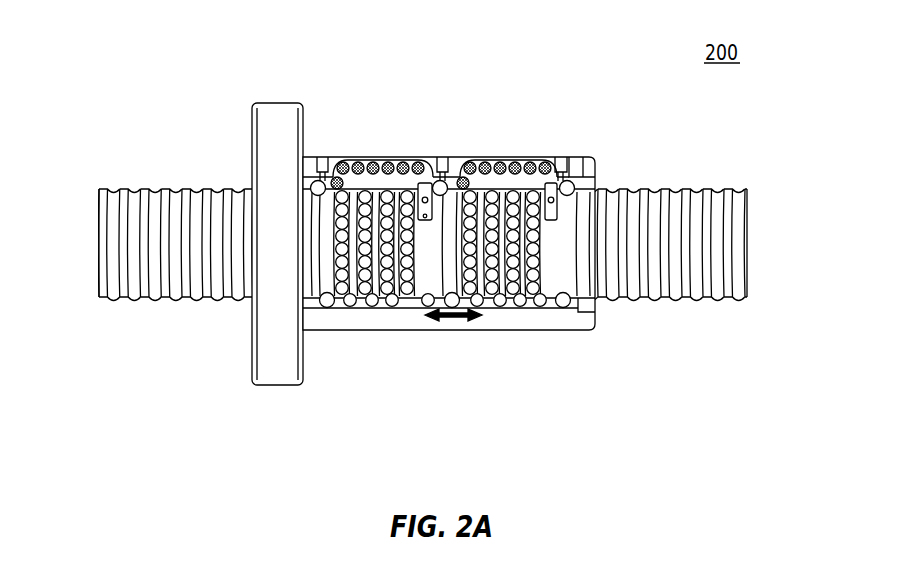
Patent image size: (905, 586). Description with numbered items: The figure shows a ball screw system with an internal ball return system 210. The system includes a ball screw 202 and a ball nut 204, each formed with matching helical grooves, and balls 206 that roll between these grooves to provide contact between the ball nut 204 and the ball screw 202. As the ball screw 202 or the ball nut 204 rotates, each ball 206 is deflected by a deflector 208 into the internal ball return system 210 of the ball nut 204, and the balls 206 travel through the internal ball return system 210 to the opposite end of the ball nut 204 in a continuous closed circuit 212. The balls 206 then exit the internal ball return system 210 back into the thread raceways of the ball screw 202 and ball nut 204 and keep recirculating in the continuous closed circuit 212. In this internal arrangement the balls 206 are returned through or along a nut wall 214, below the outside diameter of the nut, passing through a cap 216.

The ball screw 202 is at (652, 298).
The ball nut 204 is at (520, 318).
The ball 206 is at (498, 310).
The deflector 208 is at (553, 170).
The internal ball return system 210 is at (345, 162).
The continuous closed circuit 212 is at (433, 351).
The nut wall 214 is at (428, 163).
The cap 216 is at (573, 159).